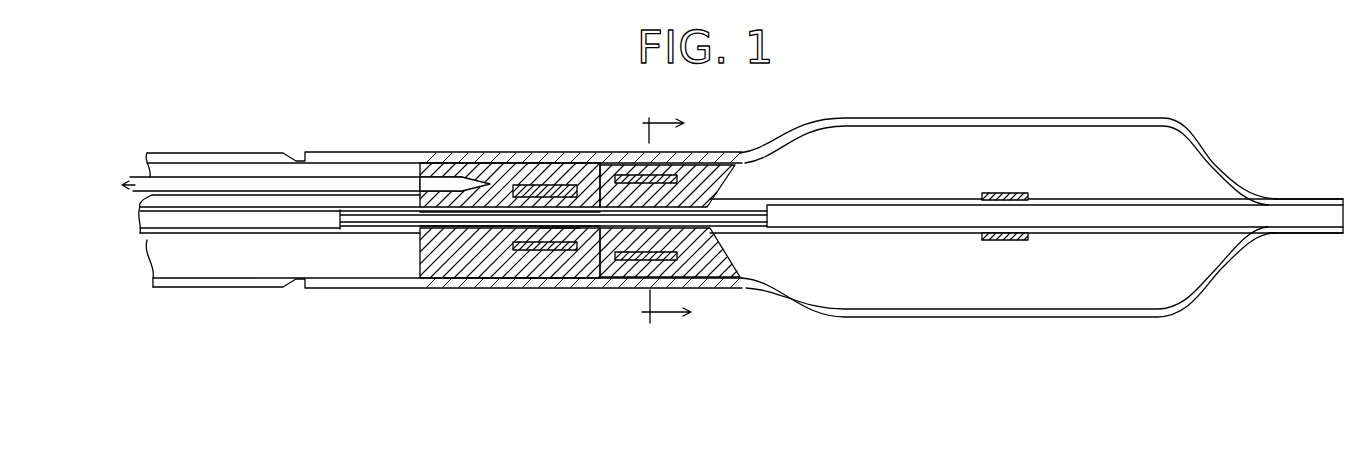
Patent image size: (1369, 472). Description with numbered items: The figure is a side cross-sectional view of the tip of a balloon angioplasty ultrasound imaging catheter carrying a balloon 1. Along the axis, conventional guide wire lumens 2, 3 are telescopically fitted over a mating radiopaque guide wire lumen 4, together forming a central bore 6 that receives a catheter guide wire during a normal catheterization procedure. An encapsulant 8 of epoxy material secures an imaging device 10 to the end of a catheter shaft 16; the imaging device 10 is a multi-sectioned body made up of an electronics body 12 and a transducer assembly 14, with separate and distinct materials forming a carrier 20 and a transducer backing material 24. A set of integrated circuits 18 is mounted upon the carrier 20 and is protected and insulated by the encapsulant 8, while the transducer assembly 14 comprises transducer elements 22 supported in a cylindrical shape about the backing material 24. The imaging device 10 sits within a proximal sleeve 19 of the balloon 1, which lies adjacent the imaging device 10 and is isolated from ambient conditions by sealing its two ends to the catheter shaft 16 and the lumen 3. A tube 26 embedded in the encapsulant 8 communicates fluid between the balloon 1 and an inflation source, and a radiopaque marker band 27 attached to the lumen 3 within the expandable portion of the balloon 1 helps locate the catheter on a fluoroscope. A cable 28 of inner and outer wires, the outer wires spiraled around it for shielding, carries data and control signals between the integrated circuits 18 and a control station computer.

The balloon 1 is at (1170, 119).
The guide wire lumen 2 is at (203, 207).
The guide wire lumen 3 is at (1301, 190).
The radiopaque guide wire lumen 4 is at (343, 303).
The central bore 6 is at (397, 220).
The encapsulant 8 is at (470, 272).
The imaging device 10 is at (514, 301).
The electronics body 12 is at (552, 265).
The transducer assembly 14 is at (611, 276).
The catheter shaft 16 is at (240, 280).
The integrated circuits 18 is at (597, 198).
The proximal sleeve 19 is at (313, 157).
The carrier 20 is at (586, 200).
The transducer elements 22 is at (630, 173).
The transducer backing material 24 is at (733, 197).
The tube 26 is at (490, 182).
The radiopaque marker band 27 is at (997, 237).
The cable 28 is at (243, 185).